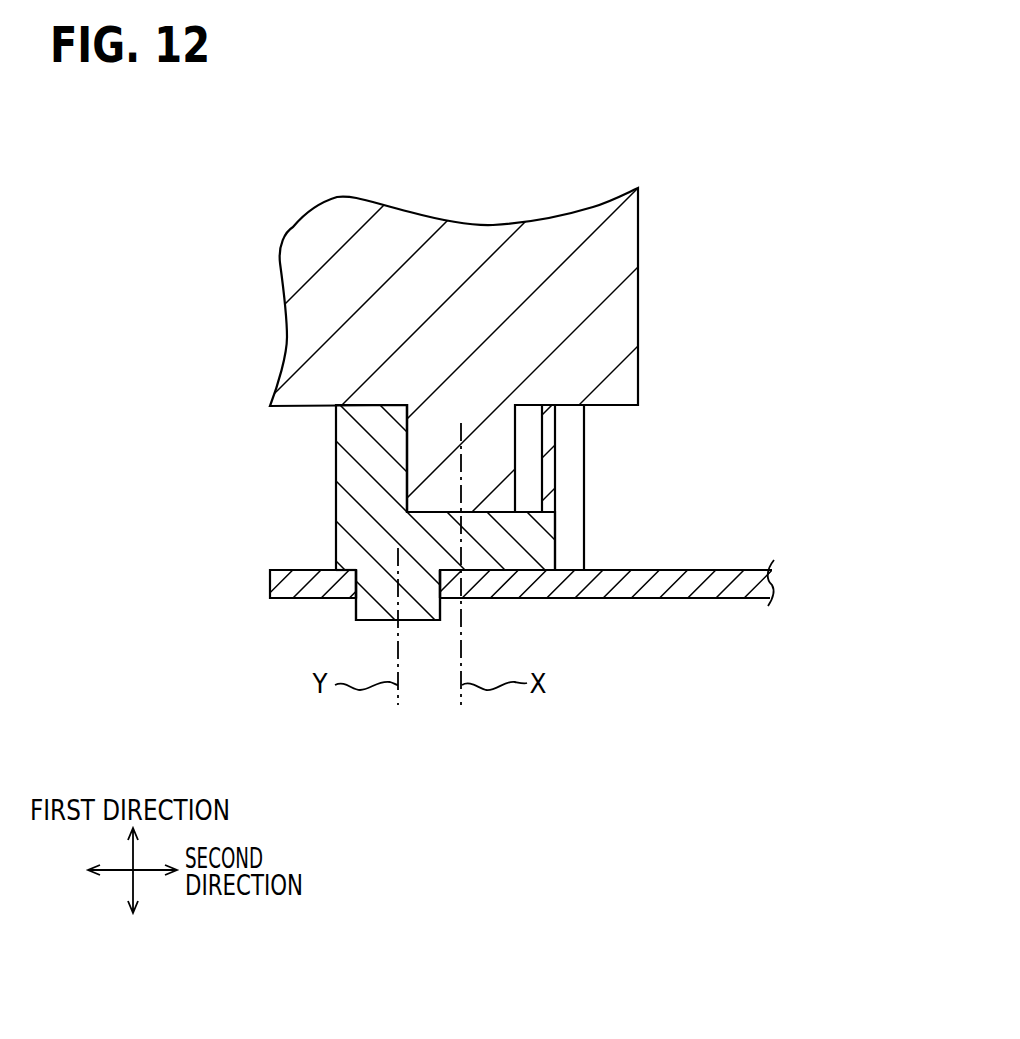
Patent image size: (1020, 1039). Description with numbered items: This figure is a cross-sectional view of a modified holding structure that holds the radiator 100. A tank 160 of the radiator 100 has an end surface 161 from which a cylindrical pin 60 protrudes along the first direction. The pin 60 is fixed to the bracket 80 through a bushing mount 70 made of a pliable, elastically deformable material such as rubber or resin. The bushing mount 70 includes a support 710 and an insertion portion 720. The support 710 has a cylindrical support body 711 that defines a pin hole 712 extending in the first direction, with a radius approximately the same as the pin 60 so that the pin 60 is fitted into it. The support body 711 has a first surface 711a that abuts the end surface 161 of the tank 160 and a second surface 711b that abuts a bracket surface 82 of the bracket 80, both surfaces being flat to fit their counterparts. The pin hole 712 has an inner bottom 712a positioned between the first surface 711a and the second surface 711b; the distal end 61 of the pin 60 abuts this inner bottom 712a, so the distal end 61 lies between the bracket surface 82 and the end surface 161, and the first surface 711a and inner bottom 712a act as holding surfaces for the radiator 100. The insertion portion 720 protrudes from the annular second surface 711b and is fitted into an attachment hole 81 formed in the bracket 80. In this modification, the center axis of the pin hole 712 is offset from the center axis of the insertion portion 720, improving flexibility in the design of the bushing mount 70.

The radiator 100 is at (402, 348).
The tank 160 is at (612, 333).
The end surface 161 is at (620, 407).
The pin 60 is at (550, 481).
The distal end 61 is at (467, 512).
The bushing mount 70 is at (385, 538).
The support 710 is at (385, 538).
The support body 711 is at (347, 503).
The first surface 711a is at (373, 407).
The second surface 711b is at (340, 570).
The pin hole 712 is at (407, 430).
The inner bottom 712a is at (437, 512).
The insertion portion 720 is at (412, 610).
The bracket 80 is at (532, 581).
The attachment hole 81 is at (357, 600).
The bracket surface 82 is at (695, 569).